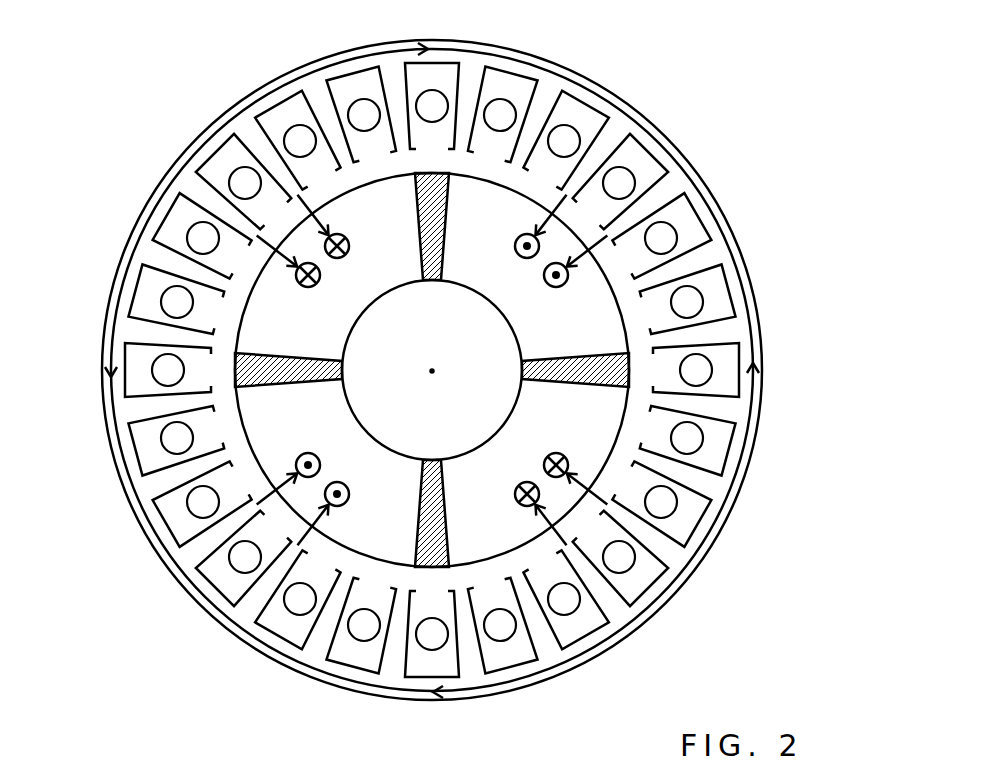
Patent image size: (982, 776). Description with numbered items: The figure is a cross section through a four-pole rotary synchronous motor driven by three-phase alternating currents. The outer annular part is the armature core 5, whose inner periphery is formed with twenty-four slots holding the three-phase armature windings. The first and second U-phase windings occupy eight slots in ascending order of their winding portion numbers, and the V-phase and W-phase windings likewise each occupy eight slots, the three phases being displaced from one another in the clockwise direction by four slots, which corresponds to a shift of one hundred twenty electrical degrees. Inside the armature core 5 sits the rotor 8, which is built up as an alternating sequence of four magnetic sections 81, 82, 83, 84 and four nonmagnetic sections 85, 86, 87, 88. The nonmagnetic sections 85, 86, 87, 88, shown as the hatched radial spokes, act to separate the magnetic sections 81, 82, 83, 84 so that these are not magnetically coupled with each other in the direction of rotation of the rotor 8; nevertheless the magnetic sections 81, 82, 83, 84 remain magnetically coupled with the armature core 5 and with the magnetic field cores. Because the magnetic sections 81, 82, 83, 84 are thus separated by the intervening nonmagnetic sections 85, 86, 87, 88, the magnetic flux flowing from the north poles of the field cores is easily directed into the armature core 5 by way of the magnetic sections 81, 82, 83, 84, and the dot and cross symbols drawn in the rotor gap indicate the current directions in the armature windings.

The armature core 5 is at (648, 132).
The rotor 8 is at (636, 343).
The magnetic section 81 is at (560, 303).
The magnetic section 82 is at (587, 436).
The magnetic section 83 is at (278, 436).
The magnetic section 84 is at (258, 288).
The nonmagnetic section 85 is at (443, 172).
The nonmagnetic section 86 is at (610, 368).
The nonmagnetic section 87 is at (433, 545).
The nonmagnetic section 88 is at (250, 373).